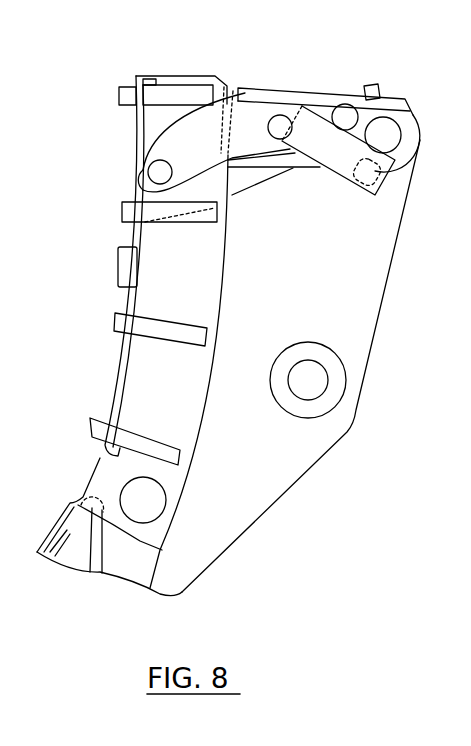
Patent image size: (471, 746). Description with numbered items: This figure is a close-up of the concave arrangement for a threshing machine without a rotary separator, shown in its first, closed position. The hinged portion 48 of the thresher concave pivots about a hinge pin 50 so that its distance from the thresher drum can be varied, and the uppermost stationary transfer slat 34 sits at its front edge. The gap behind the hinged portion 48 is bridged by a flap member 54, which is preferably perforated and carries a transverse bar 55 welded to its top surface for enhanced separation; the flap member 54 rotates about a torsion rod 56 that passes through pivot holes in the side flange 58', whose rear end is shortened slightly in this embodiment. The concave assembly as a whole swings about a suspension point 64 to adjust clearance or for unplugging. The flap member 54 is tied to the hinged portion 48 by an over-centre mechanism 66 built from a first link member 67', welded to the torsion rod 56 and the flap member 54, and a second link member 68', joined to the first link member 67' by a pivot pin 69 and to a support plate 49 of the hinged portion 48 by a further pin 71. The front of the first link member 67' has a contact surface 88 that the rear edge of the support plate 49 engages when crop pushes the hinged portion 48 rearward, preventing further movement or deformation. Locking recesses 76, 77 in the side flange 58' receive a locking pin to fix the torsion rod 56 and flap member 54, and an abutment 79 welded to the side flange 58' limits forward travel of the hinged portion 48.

The transfer slat 34 is at (119, 97).
The hinged portion 48 is at (223, 288).
The support plate 49 is at (186, 410).
The hinge pin 50 is at (150, 510).
The flap member 54 is at (303, 98).
The transverse bar 55 is at (377, 88).
The torsion rod 56 is at (386, 136).
The side flange 58' is at (301, 353).
The suspension point 64 is at (320, 383).
The over-centre mechanism 66 is at (231, 78).
The first link member 67' is at (338, 160).
The second link member 68' is at (214, 142).
The pivot pin 69 is at (281, 140).
The pin 71 is at (150, 176).
The locking recess 76 is at (344, 115).
The locking recess 77 is at (369, 180).
The abutment 79 is at (118, 266).
The contact surface 88 is at (226, 162).